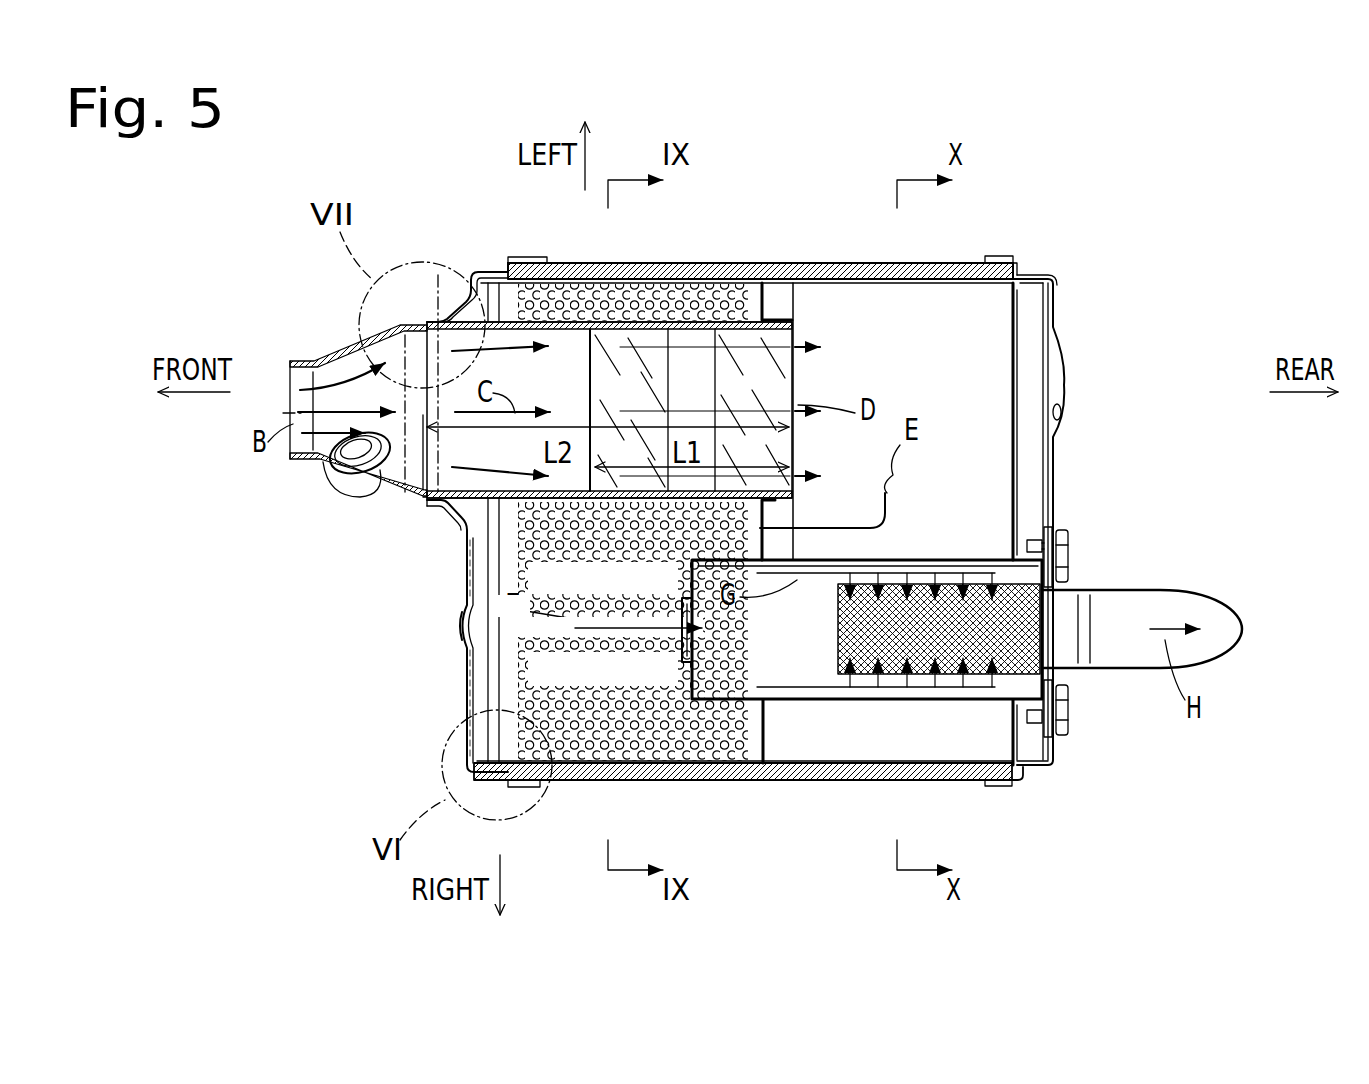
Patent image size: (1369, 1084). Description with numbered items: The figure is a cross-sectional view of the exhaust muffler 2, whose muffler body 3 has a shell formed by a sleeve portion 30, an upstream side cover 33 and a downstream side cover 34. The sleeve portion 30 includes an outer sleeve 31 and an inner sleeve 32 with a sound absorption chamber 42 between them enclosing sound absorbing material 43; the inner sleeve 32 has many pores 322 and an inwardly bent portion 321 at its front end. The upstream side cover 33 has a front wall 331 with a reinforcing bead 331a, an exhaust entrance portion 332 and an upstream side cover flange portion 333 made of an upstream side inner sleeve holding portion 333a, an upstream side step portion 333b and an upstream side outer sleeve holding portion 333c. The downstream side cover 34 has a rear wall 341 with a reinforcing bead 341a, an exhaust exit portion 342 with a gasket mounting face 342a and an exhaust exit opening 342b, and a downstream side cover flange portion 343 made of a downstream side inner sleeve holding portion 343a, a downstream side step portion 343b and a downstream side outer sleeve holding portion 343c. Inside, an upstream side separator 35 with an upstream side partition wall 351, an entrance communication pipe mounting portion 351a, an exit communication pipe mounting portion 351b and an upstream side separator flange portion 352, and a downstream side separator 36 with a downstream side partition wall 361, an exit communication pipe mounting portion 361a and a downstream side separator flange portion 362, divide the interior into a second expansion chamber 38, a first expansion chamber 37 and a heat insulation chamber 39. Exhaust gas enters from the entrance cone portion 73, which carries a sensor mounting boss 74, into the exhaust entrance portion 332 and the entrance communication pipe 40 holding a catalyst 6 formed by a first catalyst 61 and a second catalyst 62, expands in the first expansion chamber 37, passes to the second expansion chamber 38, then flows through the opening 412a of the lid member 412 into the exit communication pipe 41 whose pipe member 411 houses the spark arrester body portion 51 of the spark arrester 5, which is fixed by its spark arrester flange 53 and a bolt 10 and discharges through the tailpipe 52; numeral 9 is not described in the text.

The exhaust muffler 2 is at (988, 152).
The muffler body 3 is at (940, 262).
The spark arrester 5 is at (1222, 672).
The catalyst 6 is at (590, 380).
The flange plate 9 is at (1058, 578).
The bolt 10 is at (1070, 548).
The sleeve portion 30 is at (835, 203).
The outer sleeve 31 is at (915, 262).
The inner sleeve 32 is at (853, 262).
The upstream side cover 33 is at (472, 738).
The downstream side cover 34 is at (1056, 300).
The upstream side separator 35 is at (790, 512).
The downstream side separator 36 is at (1010, 478).
The first expansion chamber 37 is at (847, 780).
The second expansion chamber 38 is at (736, 308).
The heat insulation chamber 39 is at (1027, 345).
The entrance communication pipe 40 is at (490, 505).
The exit communication pipe 41 is at (818, 702).
The sound absorption chamber 42 is at (622, 262).
The sound absorbing material 43 is at (700, 262).
The spark arrester body portion 51 is at (835, 640).
The tailpipe 52 is at (1195, 605).
The spark arrester flange 53 is at (1065, 735).
The first catalyst 61 is at (651, 392).
The second catalyst 62 is at (773, 392).
The entrance cone portion 73 is at (322, 358).
The sensor mounting boss 74 is at (335, 478).
The bent portion 321 is at (515, 786).
The pores 322 is at (665, 780).
The front wall 331 is at (468, 683).
The reinforcing bead 331a is at (466, 625).
The exhaust entrance portion 332 is at (433, 505).
The upstream side cover flange portion 333 is at (403, 166).
The upstream side inner sleeve holding portion 333a is at (490, 276).
The upstream side step portion 333b is at (500, 265).
The upstream side outer sleeve holding portion 333c is at (530, 258).
The rear wall 341 is at (1052, 355).
The reinforcing bead 341a is at (1060, 412).
The exhaust exit portion 342 is at (1062, 530).
The gasket mounting face 342a is at (1053, 596).
The exhaust exit opening 342b is at (1035, 528).
The downstream side cover flange portion 343 is at (1188, 210).
The downstream side inner sleeve holding portion 343a is at (1030, 290).
The downstream side step portion 343b is at (1020, 270).
The downstream side outer sleeve holding portion 343c is at (1012, 262).
The upstream side partition wall 351 is at (770, 727).
The entrance communication pipe mounting portion 351a is at (783, 303).
The exit communication pipe mounting portion 351b is at (773, 560).
The upstream side separator flange portion 352 is at (800, 778).
The downstream side partition wall 361 is at (1015, 412).
The exit communication pipe mounting portion 361a is at (1050, 767).
The downstream side separator flange portion 362 is at (1055, 290).
The pipe member 411 is at (897, 700).
The lid member 412 is at (670, 640).
The opening 412a is at (672, 603).